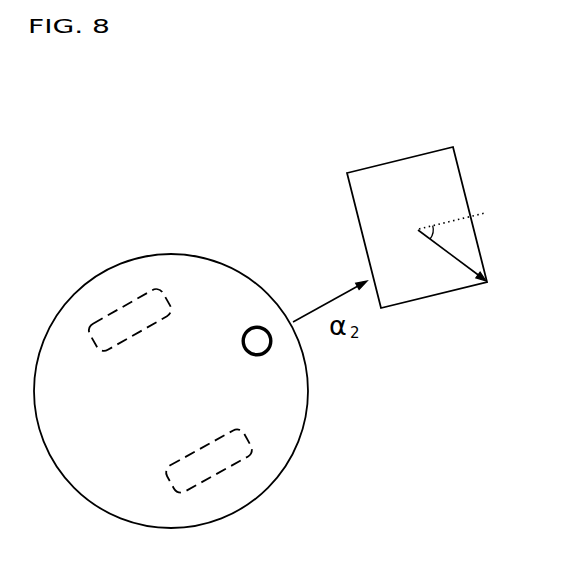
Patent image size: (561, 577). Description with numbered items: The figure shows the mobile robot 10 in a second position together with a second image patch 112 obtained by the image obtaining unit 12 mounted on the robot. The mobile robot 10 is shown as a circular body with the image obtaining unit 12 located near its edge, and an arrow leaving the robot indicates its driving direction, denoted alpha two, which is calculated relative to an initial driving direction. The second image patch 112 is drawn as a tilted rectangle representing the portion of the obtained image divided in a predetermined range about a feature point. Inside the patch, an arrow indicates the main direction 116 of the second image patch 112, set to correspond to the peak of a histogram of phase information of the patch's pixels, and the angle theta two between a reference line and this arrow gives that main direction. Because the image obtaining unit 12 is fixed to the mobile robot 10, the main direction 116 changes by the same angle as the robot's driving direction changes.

The mobile robot 10 is at (316, 427).
The image obtaining unit 12 is at (256, 340).
The second image patch 112 is at (383, 153).
The main direction 116 is at (454, 264).